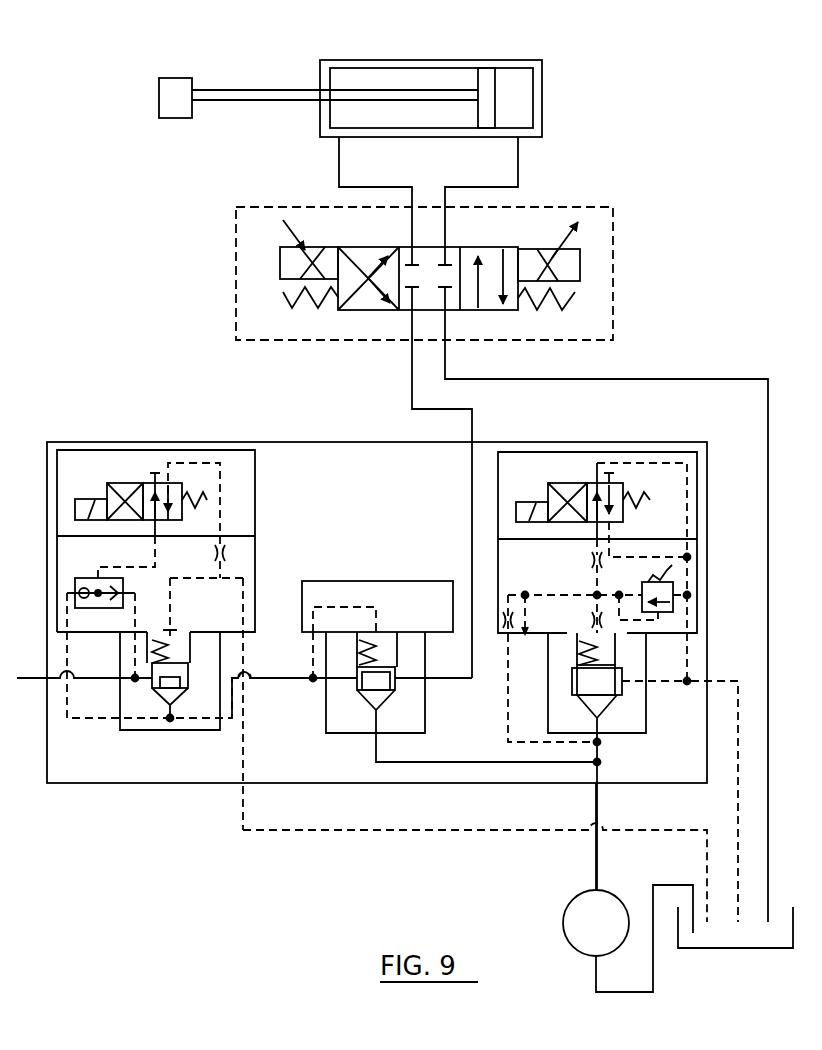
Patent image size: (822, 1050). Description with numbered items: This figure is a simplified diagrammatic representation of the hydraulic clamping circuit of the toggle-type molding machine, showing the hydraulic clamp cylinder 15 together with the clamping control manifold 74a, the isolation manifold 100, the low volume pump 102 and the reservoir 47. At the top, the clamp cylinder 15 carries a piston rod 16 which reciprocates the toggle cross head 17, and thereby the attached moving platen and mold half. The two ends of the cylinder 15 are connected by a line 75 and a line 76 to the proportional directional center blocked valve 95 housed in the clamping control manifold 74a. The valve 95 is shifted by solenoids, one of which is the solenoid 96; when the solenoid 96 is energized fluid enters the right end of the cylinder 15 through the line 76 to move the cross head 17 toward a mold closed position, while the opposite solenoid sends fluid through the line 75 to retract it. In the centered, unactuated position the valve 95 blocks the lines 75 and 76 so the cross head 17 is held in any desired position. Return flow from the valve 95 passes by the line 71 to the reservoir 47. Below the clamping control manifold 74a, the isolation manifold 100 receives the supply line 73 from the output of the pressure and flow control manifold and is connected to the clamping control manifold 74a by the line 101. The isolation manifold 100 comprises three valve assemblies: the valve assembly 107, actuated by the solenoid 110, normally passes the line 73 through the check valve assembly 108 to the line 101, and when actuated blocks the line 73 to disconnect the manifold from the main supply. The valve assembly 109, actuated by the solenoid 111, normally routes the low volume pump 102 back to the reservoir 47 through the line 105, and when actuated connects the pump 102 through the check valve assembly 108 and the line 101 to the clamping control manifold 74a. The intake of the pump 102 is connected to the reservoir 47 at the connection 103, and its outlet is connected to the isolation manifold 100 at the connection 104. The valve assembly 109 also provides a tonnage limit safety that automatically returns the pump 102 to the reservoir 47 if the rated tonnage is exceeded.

The hydraulic clamp cylinder 15 is at (405, 60).
The piston rod 16 is at (243, 93).
The toggle cross head 17 is at (174, 78).
The line 75 is at (339, 162).
The line 76 is at (518, 163).
The clamping control manifold 74a is at (613, 287).
The proportional directional center blocked valve 95 is at (492, 249).
The solenoid 96 is at (280, 258).
The line 101 is at (412, 382).
The return conduit 71 is at (768, 418).
The isolation manifold 100 is at (125, 441).
The valve assembly 107 is at (258, 487).
The solenoid 110 is at (85, 499).
The valve assembly 108 is at (377, 578).
The valve assembly 109 is at (497, 500).
The solenoid 111 is at (527, 500).
The line 73 is at (22, 676).
The line 105 is at (738, 812).
The pump outlet connection 104 is at (596, 848).
The low volume pump 102 is at (605, 891).
The pump intake connection 103 is at (640, 991).
The reservoir 47 is at (693, 950).